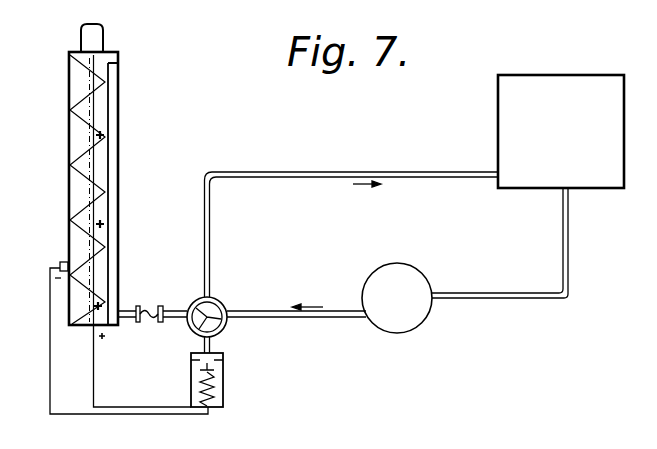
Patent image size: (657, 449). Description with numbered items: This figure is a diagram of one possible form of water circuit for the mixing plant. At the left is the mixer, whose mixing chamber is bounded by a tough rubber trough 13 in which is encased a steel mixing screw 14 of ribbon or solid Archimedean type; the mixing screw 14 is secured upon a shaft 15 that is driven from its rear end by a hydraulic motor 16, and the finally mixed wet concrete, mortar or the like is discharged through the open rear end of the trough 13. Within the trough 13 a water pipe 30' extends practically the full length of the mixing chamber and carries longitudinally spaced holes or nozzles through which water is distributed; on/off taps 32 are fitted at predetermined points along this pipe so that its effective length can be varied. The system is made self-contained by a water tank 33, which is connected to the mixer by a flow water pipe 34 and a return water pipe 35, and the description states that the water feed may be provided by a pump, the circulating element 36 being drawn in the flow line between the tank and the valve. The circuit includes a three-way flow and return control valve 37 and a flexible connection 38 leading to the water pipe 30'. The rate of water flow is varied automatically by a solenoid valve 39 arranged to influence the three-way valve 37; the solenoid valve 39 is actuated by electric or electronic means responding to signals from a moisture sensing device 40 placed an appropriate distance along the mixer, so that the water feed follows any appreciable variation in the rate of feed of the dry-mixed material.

The trough 13 is at (69, 190).
The mixing screw 14 is at (107, 107).
The shaft 15 is at (112, 193).
The hydraulic motor 16 is at (102, 39).
The water pipe 30' is at (138, 194).
The on/off taps 32 is at (98, 135).
The water tank 33 is at (575, 164).
The flow water pipe 34 is at (502, 293).
The return water pipe 35 is at (383, 172).
The pump 36 is at (412, 318).
The 3-way flow and return control valve 37 is at (223, 311).
The flexible connection 38 is at (150, 311).
The solenoid valve 39 is at (223, 374).
The moisture sensing device 40 is at (61, 264).